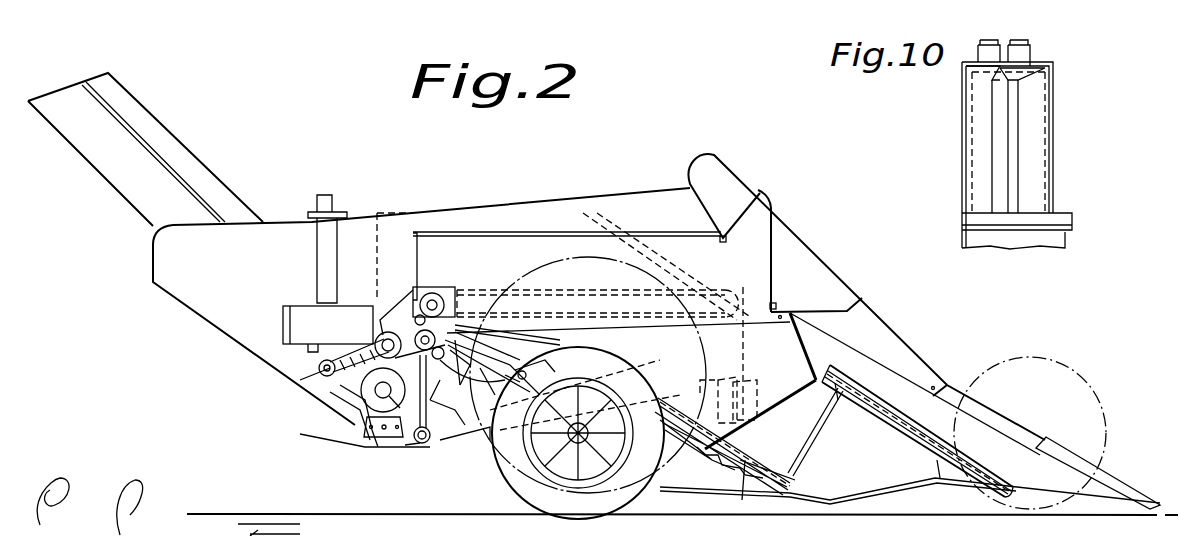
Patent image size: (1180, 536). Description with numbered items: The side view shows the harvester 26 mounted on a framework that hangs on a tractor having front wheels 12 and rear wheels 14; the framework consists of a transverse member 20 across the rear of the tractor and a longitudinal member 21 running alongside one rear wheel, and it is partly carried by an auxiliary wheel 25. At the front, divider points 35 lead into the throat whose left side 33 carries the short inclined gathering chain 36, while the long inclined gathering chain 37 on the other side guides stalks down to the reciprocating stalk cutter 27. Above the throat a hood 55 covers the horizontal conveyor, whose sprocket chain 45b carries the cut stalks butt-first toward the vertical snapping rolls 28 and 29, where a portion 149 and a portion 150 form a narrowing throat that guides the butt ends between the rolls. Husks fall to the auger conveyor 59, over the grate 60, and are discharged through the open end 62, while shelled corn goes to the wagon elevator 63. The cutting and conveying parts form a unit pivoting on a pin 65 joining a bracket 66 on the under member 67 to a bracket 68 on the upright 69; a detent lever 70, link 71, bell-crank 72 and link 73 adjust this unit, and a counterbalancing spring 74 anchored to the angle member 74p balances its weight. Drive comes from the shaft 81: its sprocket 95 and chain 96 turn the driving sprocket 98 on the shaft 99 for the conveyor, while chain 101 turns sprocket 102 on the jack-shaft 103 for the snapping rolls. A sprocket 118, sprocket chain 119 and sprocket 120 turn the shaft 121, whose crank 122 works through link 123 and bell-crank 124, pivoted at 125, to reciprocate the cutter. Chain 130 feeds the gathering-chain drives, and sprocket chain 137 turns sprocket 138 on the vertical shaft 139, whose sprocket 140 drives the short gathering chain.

In FIG. 2, the front wheels 12 is at (1062, 365).
In FIG. 2, the rear wheels 14 is at (585, 262).
In FIG. 2, the transverse member 20 is at (408, 450).
In FIG. 2, the longitudinal member 21 is at (468, 455).
In FIG. 2, the wheel 25 is at (548, 497).
In FIG. 2, the harvester 26 is at (657, 179).
In FIG. 2, the reciprocating stalk cutter 27 is at (750, 505).
In FIG. 10, the snapping roll 28 is at (975, 106).
In FIG. 10, the snapping roll 29 is at (1030, 105).
In FIG. 2, the left side 33 is at (913, 357).
In FIG. 2, the divider points 35 is at (1115, 475).
In FIG. 2, the short inclined gathering chain 36 is at (695, 410).
In FIG. 2, the long inclined gathering chain 37 is at (680, 270).
In FIG. 2, the sprocket chain 45b is at (480, 300).
In FIG. 2, the hood 55 is at (503, 210).
In FIG. 2, the auger conveyor 59 is at (350, 414).
In FIG. 2, the grate 60 is at (332, 434).
In FIG. 2, the open end 62 is at (352, 395).
In FIG. 2, the wagon elevator 63 is at (183, 150).
In FIG. 2, the pin 65 is at (405, 360).
In FIG. 2, the bracket 66 is at (455, 370).
In FIG. 2, the under member 67 is at (492, 390).
In FIG. 2, the bracket 68 is at (428, 385).
In FIG. 2, the upright 69 is at (465, 415).
In FIG. 2, the detent lever 70 is at (740, 348).
In FIG. 2, the link 71 is at (698, 388).
In FIG. 2, the bell-crank 72 is at (585, 470).
In FIG. 2, the link 73 is at (640, 455).
In FIG. 2, the counterbalancing spring 74 is at (436, 450).
In FIG. 2, the angle member 74p is at (415, 460).
In FIG. 2, the shaft 81 is at (388, 328).
In FIG. 2, the sprocket 95 is at (388, 332).
In FIG. 2, the chain 96 is at (405, 300).
In FIG. 2, the driving sprocket 98 is at (436, 292).
In FIG. 2, the shaft 99 is at (430, 330).
In FIG. 2, the chain 101 is at (345, 338).
In FIG. 2, the sprocket 102 is at (318, 366).
In FIG. 2, the jack-shaft 103 is at (300, 382).
In FIG. 2, the sprocket 118 is at (456, 385).
In FIG. 2, the sprocket chain 119 is at (467, 382).
In FIG. 2, the sprocket 120 is at (462, 340).
In FIG. 2, the shaft 121 is at (528, 390).
In FIG. 2, the crank 122 is at (526, 380).
In FIG. 2, the link 123 is at (660, 490).
In FIG. 2, the bell-crank 124 is at (740, 445).
In FIG. 2, the pivot 125 is at (705, 480).
In FIG. 2, the chain 130 is at (525, 338).
In FIG. 2, the sprocket chain 137 is at (758, 456).
In FIG. 2, the sprocket 138 is at (800, 482).
In FIG. 2, the vertical shaft 139 is at (815, 438).
In FIG. 2, the sprocket 140 is at (836, 402).
In FIG. 10, the portion 149 is at (1050, 147).
In FIG. 10, the portion 150 is at (968, 140).